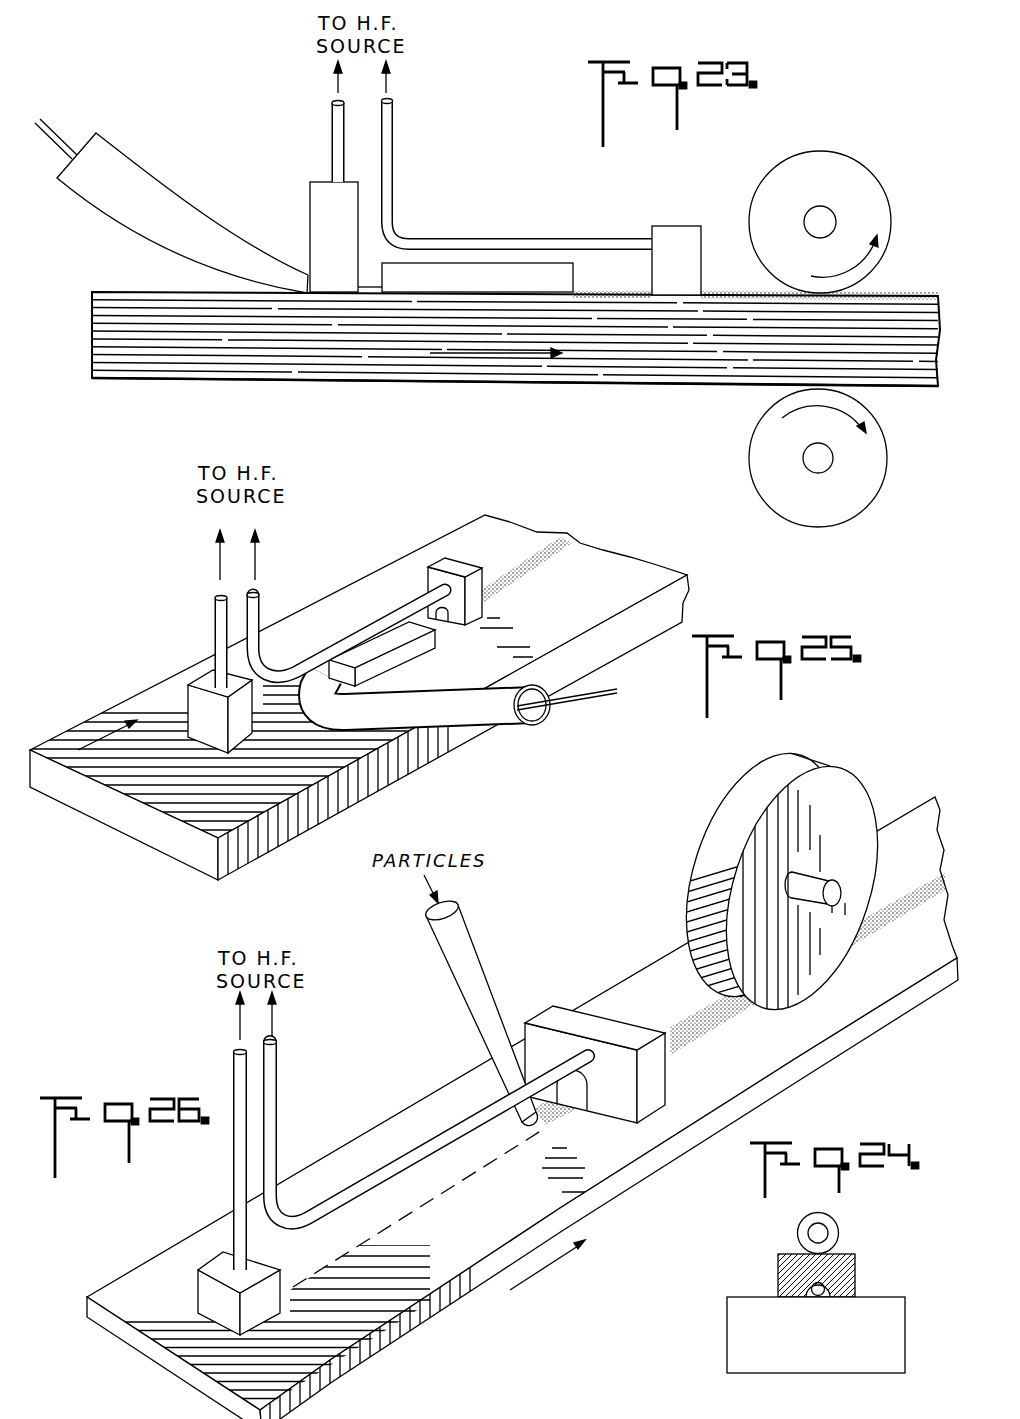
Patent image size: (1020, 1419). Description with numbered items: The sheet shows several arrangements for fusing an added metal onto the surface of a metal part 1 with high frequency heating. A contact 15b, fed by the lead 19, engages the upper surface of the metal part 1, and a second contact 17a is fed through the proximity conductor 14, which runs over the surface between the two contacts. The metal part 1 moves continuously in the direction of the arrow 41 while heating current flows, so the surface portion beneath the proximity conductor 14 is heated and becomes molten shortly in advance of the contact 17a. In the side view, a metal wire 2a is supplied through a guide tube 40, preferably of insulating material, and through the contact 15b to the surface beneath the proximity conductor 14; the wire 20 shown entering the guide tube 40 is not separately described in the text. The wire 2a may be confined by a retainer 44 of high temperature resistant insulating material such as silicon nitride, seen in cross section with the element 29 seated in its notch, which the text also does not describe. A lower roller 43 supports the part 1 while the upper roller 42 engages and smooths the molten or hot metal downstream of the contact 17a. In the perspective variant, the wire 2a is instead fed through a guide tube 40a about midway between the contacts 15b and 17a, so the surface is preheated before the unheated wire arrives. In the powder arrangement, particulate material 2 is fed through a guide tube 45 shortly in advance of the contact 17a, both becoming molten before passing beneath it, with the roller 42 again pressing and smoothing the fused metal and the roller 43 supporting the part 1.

In FIG. 23, the metal part 1 is at (371, 371).
In FIG. 26, the metal part 1 is at (415, 1313).
In FIG. 24, the metal part 1 is at (738, 1332).
In FIG. 26, the particulate material 2 is at (577, 1113).
In FIG. 25, the metal wire 2a is at (587, 700).
In FIG. 23, the proximity conductor 14 is at (494, 240).
In FIG. 25, the proximity conductor 14 is at (407, 600).
In FIG. 26, the proximity conductor 14 is at (397, 1160).
In FIG. 24, the proximity conductor 14 is at (804, 1218).
In FIG. 23, the contact 15b is at (311, 193).
In FIG. 25, the contact 15b is at (193, 680).
In FIG. 26, the contact 15b is at (207, 1288).
In FIG. 23, the contact 17a is at (678, 226).
In FIG. 25, the contact 17a is at (470, 608).
In FIG. 26, the contact 17a is at (655, 1077).
In FIG. 23, the lead 19 is at (357, 114).
In FIG. 26, the lead 19 is at (235, 1068).
In FIG. 23, the wire 20 is at (57, 138).
In FIG. 24, the channel 29 is at (818, 1296).
In FIG. 23, the guide tube 40 is at (222, 250).
In FIG. 25, the guide tube 40a is at (487, 720).
In FIG. 23, the arrow 41 is at (505, 367).
In FIG. 25, the arrow 41 is at (105, 733).
In FIG. 26, the arrow 41 is at (537, 1279).
In FIG. 23, the upper roller 42 is at (830, 168).
In FIG. 26, the upper roller 42 is at (703, 878).
In FIG. 23, the lower roller 43 is at (880, 448).
In FIG. 23, the retainer 44 is at (472, 283).
In FIG. 25, the retainer 44 is at (403, 652).
In FIG. 24, the retainer 44 is at (778, 1263).
In FIG. 26, the guide tube 45 is at (473, 947).